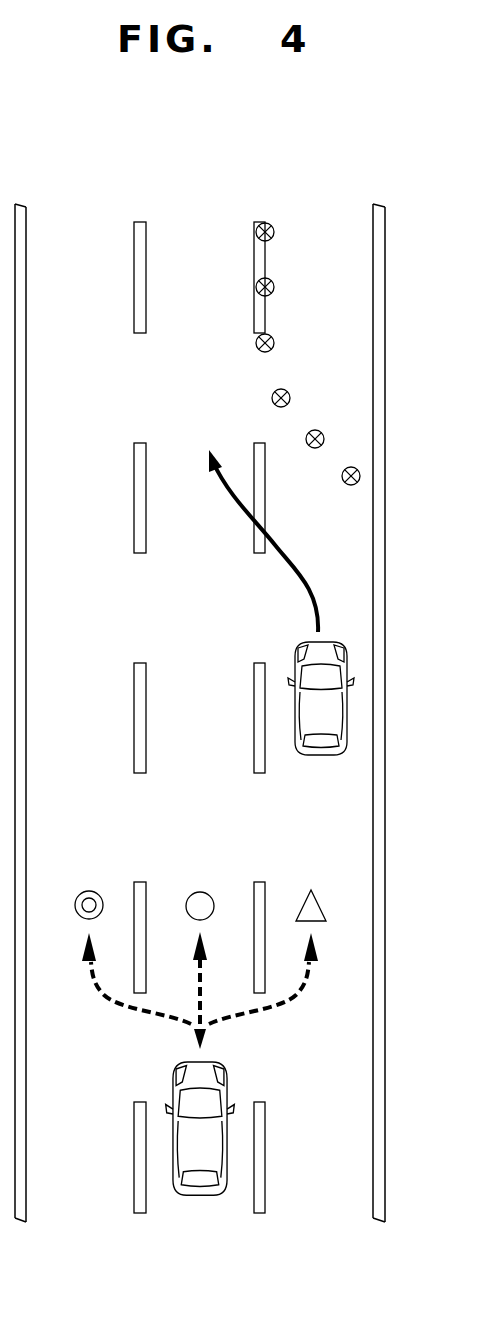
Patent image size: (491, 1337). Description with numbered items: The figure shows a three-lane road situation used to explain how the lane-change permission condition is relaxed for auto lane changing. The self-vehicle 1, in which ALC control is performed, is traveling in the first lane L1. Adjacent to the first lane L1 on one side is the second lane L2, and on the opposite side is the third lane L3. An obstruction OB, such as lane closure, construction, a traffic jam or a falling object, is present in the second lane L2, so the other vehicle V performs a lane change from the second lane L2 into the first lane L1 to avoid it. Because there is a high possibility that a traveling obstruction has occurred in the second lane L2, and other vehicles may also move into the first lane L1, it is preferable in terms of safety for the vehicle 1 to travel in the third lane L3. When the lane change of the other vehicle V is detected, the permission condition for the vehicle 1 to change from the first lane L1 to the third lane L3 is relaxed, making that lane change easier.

The vehicle 1 is at (222, 1153).
The other vehicle V is at (343, 723).
The obstruction OB is at (353, 324).
The first lane L1 is at (255, 194).
The second lane L2 is at (372, 194).
The third lane L3 is at (134, 194).